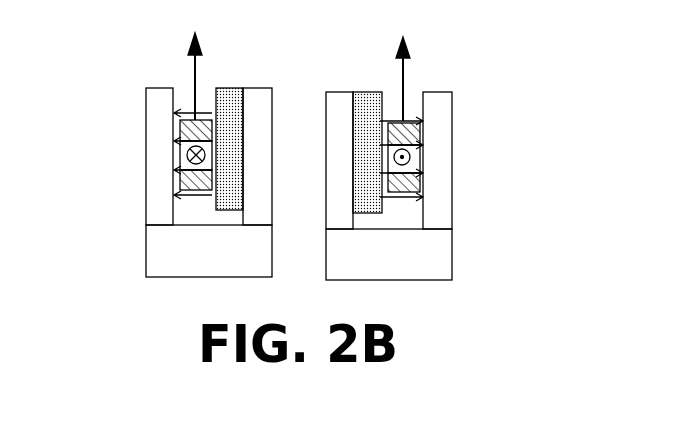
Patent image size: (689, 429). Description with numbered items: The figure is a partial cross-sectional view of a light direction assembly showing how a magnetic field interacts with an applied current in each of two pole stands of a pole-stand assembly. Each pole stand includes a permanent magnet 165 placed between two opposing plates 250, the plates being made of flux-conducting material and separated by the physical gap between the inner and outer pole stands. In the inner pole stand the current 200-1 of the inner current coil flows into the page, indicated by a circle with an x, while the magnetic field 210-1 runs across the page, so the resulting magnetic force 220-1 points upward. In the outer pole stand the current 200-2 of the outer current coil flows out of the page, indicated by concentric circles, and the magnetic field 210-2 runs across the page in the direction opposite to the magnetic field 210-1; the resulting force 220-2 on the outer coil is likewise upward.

The permanent magnet 165 is at (228, 88).
The opposing plates 250 is at (326, 158).
The current 200-1 is at (186, 152).
The current 200-2 is at (405, 154).
The magnetic field 210-1 is at (184, 199).
The magnetic field 210-2 is at (404, 210).
The magnetic force 220-1 is at (193, 70).
The magnetic force 220-2 is at (403, 68).